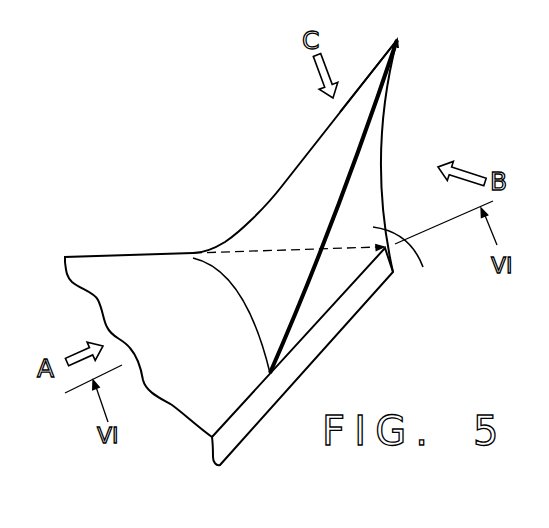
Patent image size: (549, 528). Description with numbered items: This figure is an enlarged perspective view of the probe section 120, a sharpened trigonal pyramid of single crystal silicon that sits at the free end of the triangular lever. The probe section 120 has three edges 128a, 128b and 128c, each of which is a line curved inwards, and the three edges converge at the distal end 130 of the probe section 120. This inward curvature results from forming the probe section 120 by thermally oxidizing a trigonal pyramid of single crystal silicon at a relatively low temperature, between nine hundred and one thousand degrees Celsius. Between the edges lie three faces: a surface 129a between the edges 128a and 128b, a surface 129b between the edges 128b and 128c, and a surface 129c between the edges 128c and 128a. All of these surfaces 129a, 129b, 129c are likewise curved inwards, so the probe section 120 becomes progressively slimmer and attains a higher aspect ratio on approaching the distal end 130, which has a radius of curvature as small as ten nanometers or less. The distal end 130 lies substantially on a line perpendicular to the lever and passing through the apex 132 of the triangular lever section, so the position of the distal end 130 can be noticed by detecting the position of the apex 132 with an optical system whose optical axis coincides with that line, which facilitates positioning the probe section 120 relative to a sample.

The probe section 120 is at (361, 83).
The distal end 130 is at (398, 40).
The edge 128a is at (277, 188).
The edge 128b is at (358, 152).
The edge 128c is at (385, 115).
The surface 129a is at (253, 237).
The surface 129b is at (424, 261).
The surface 129c is at (331, 164).
The apex 132 is at (393, 272).